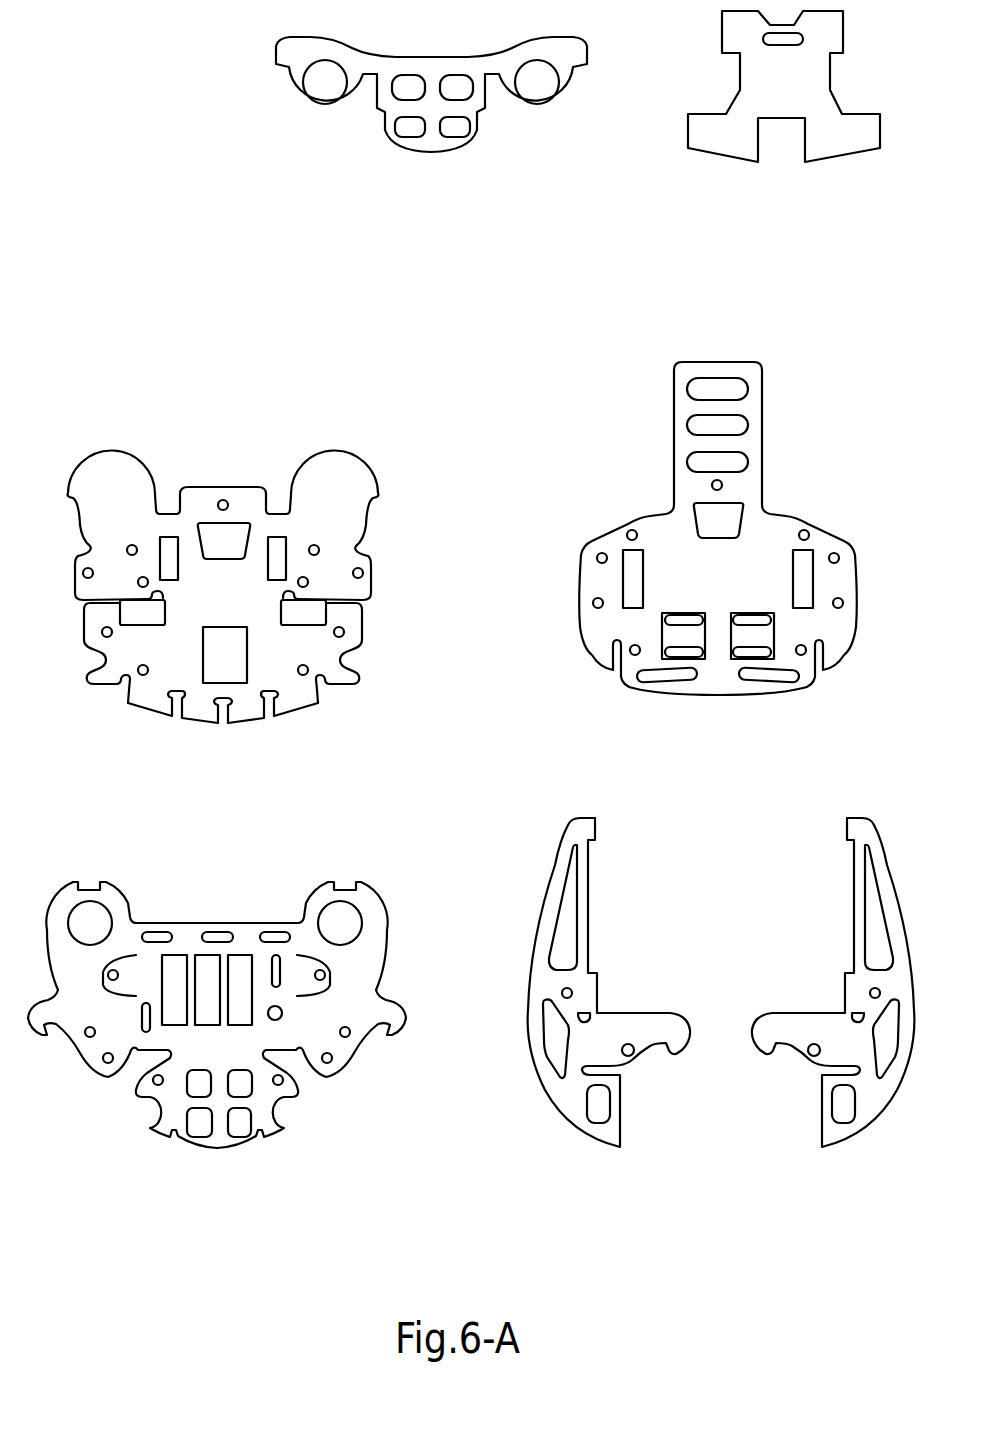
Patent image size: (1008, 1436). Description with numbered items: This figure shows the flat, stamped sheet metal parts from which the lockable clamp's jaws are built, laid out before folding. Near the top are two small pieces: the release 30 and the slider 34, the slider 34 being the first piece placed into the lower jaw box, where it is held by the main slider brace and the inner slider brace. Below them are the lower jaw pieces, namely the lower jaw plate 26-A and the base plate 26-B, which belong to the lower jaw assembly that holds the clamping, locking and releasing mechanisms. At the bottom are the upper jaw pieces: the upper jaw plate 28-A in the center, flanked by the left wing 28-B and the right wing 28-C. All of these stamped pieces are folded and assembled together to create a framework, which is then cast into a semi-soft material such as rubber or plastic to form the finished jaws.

The release 30 is at (442, 156).
The slider 34 is at (785, 145).
The lower jaw plate 26-A is at (222, 482).
The base plate 26-B is at (645, 513).
The upper jaw plate 28-A is at (213, 913).
The left wing 28-B is at (595, 945).
The right wing 28-C is at (843, 945).